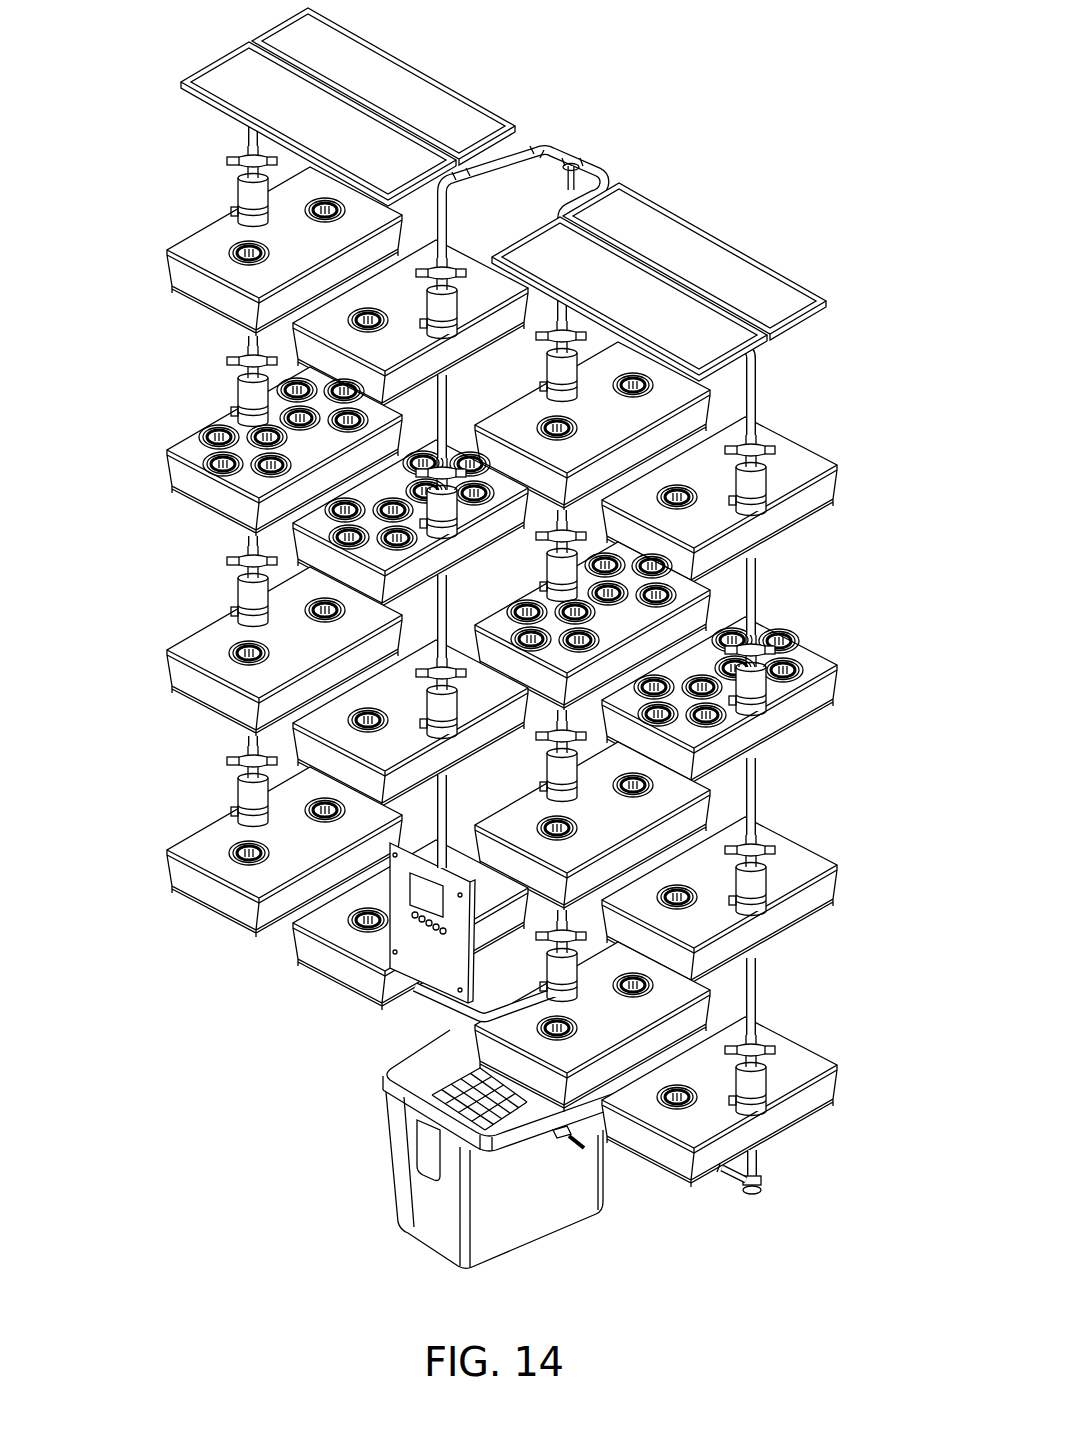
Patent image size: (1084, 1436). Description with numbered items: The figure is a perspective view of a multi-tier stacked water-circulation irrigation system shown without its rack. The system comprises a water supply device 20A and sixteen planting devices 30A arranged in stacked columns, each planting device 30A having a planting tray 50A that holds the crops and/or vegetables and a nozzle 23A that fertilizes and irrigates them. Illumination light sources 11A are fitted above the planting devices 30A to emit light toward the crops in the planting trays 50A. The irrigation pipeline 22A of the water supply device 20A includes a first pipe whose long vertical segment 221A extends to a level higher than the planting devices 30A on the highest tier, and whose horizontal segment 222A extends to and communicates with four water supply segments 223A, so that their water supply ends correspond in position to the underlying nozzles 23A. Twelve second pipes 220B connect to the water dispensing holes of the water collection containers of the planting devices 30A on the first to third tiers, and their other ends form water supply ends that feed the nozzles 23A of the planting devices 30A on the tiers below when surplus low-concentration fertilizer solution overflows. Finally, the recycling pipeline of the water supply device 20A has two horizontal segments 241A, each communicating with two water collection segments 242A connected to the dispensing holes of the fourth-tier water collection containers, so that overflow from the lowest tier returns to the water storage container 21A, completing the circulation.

The illumination light source 11A is at (227, 72).
The water supply device 20A is at (582, 1250).
The water storage container 21A is at (440, 1213).
The irrigation pipeline 22A is at (614, 89).
The nozzle 23A is at (240, 192).
The planting device 30A is at (150, 232).
The planting tray 50A is at (205, 242).
The second pipe 220B is at (758, 584).
The vertical segment 221A is at (548, 160).
The horizontal segment 222A is at (582, 165).
The water supply segment 223A is at (250, 135).
The horizontal segment 241A is at (738, 1196).
The water collection segment 242A is at (772, 1172).